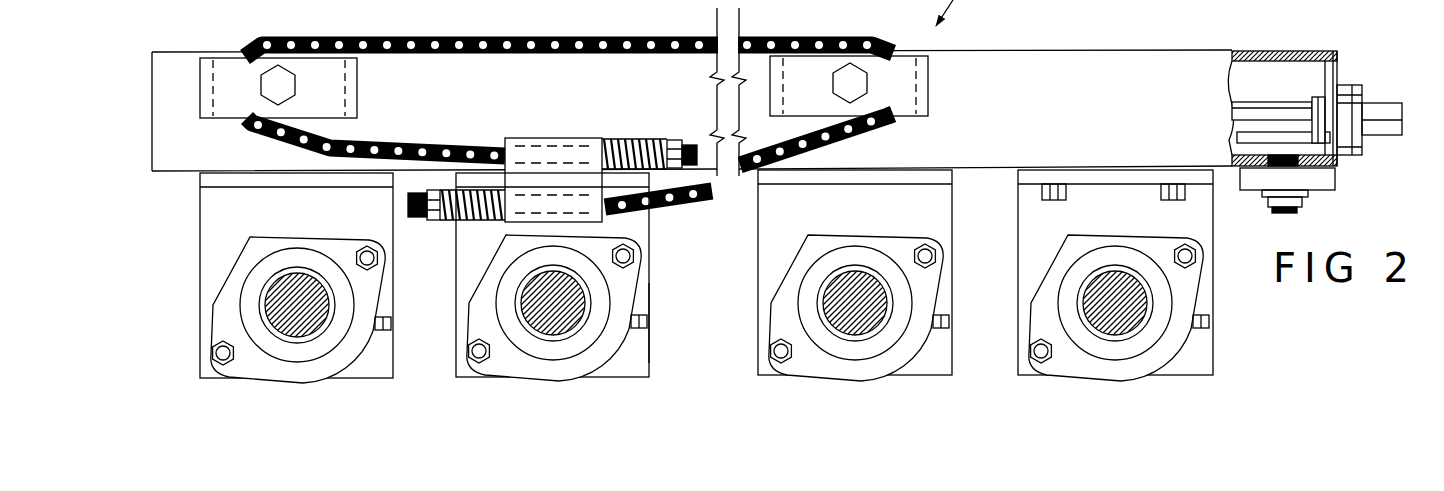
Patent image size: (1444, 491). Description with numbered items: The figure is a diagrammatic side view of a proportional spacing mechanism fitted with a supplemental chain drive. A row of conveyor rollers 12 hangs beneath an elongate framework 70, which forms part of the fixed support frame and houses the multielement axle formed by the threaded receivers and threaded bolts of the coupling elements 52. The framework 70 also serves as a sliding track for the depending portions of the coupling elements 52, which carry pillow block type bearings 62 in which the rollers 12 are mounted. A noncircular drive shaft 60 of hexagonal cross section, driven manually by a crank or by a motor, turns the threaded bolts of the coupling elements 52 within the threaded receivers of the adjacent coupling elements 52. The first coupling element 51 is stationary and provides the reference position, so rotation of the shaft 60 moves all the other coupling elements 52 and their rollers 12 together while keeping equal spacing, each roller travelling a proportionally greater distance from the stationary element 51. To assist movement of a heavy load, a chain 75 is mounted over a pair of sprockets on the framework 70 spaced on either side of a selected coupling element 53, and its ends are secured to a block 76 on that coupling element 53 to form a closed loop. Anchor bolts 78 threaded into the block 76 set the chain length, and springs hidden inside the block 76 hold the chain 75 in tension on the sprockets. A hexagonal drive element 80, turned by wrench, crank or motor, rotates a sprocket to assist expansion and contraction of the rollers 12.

The conveyor rollers 12 is at (701, 344).
The first coupling element 51 is at (1161, 272).
The coupling elements 52 is at (421, 275).
The selected coupling element 53 is at (683, 329).
The drive shaft 60 is at (1410, 138).
The pillow block type bearings 62 is at (711, 339).
The elongate framework 70 is at (1097, 49).
The chain 75 is at (434, 33).
The block 76 is at (522, 137).
The anchor bolts 78 is at (631, 137).
The drive element 80 is at (302, 83).